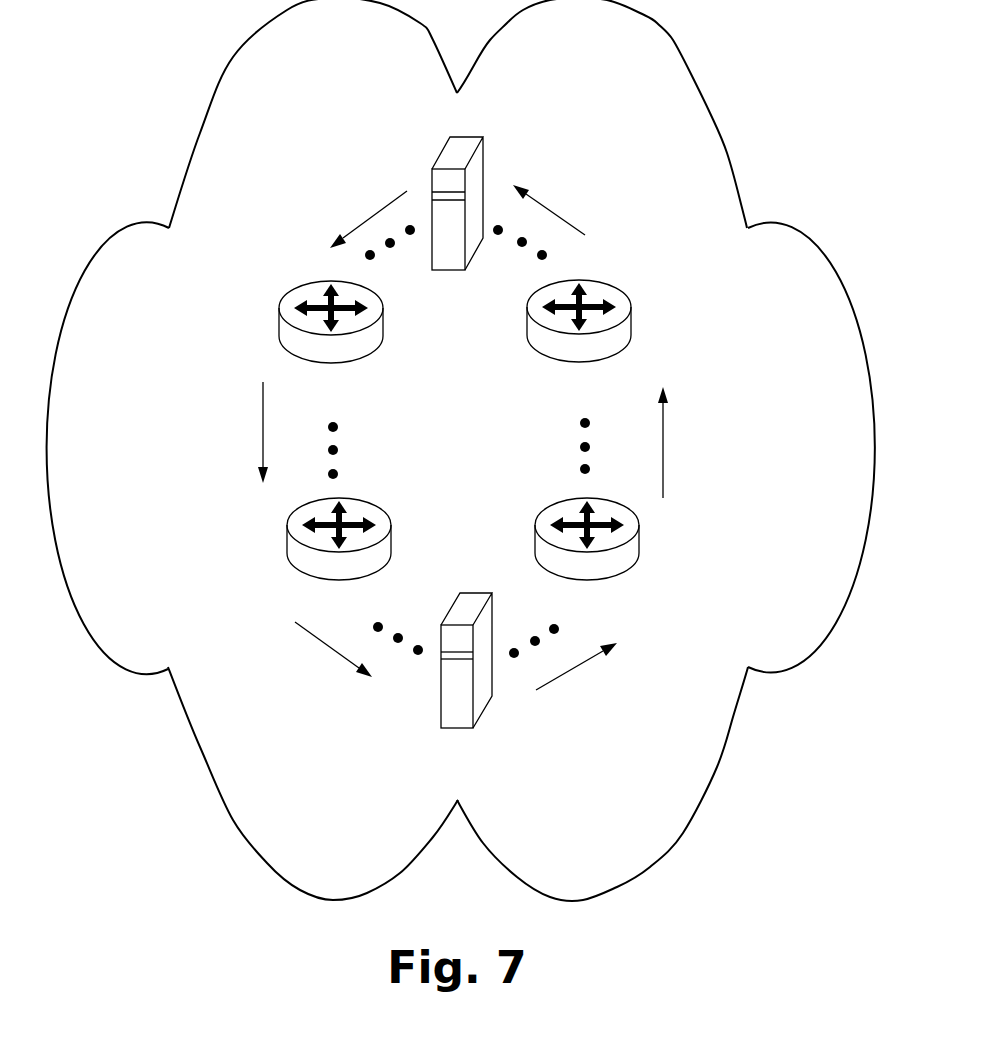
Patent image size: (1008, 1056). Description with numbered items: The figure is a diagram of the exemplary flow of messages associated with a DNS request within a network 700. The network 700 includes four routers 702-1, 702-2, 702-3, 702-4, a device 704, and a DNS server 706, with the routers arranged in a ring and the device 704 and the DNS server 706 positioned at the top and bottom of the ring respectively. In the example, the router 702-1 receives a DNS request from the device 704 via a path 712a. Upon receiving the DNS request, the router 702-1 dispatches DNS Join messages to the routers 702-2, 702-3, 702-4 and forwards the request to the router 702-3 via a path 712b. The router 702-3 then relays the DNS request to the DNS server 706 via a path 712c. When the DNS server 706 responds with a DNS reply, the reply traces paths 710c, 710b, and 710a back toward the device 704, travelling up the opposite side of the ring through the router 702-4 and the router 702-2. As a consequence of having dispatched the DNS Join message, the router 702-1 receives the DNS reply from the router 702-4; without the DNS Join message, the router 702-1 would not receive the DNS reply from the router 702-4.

The network 700 is at (690, 78).
The router 702-1 is at (304, 398).
The router 702-2 is at (551, 398).
The router 702-3 is at (313, 611).
The router 702-4 is at (559, 611).
The device 704 is at (440, 307).
The DNS server 706 is at (440, 772).
The path 710a is at (572, 670).
The path 710b is at (663, 468).
The path 710c is at (562, 218).
The path 712a is at (366, 217).
The path 712b is at (263, 425).
The path 712c is at (330, 648).